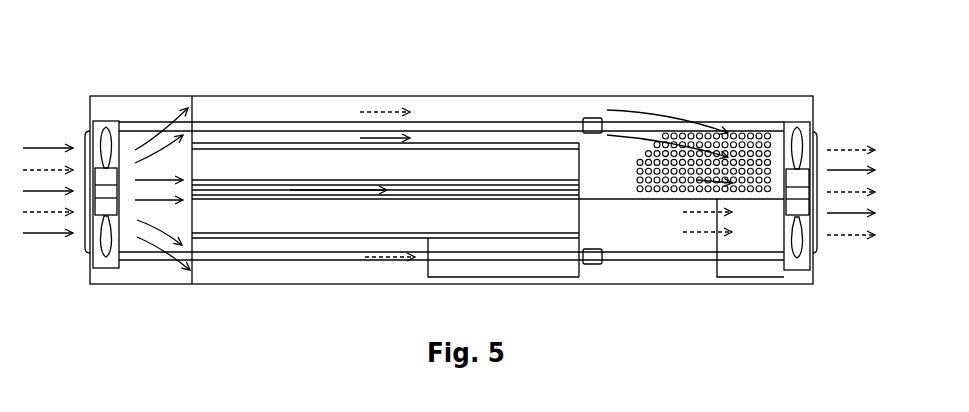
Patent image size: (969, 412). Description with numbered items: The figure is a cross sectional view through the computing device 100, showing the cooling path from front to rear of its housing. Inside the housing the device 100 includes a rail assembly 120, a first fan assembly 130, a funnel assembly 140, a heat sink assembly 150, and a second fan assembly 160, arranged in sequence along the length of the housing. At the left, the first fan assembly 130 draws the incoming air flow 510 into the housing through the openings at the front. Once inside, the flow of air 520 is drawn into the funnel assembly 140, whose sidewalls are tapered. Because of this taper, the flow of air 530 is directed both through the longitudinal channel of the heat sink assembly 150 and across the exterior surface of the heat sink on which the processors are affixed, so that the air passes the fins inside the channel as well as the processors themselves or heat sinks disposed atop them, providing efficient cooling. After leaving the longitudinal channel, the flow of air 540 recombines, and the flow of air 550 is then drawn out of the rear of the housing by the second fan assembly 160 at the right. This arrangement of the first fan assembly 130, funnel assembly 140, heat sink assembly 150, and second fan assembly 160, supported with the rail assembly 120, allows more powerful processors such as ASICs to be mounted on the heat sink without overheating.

The device 100 is at (110, 72).
The rail assembly 120 is at (273, 120).
The first fan assembly 130 is at (101, 269).
The funnel assembly 140 is at (180, 284).
The heat sink assembly 150 is at (347, 240).
The second fan assembly 160 is at (793, 270).
The air flow 510 is at (48, 140).
The flow of air 520 is at (140, 121).
The flow of air 530 is at (388, 105).
The flow of air 540 is at (713, 116).
The flow of air 550 is at (843, 143).